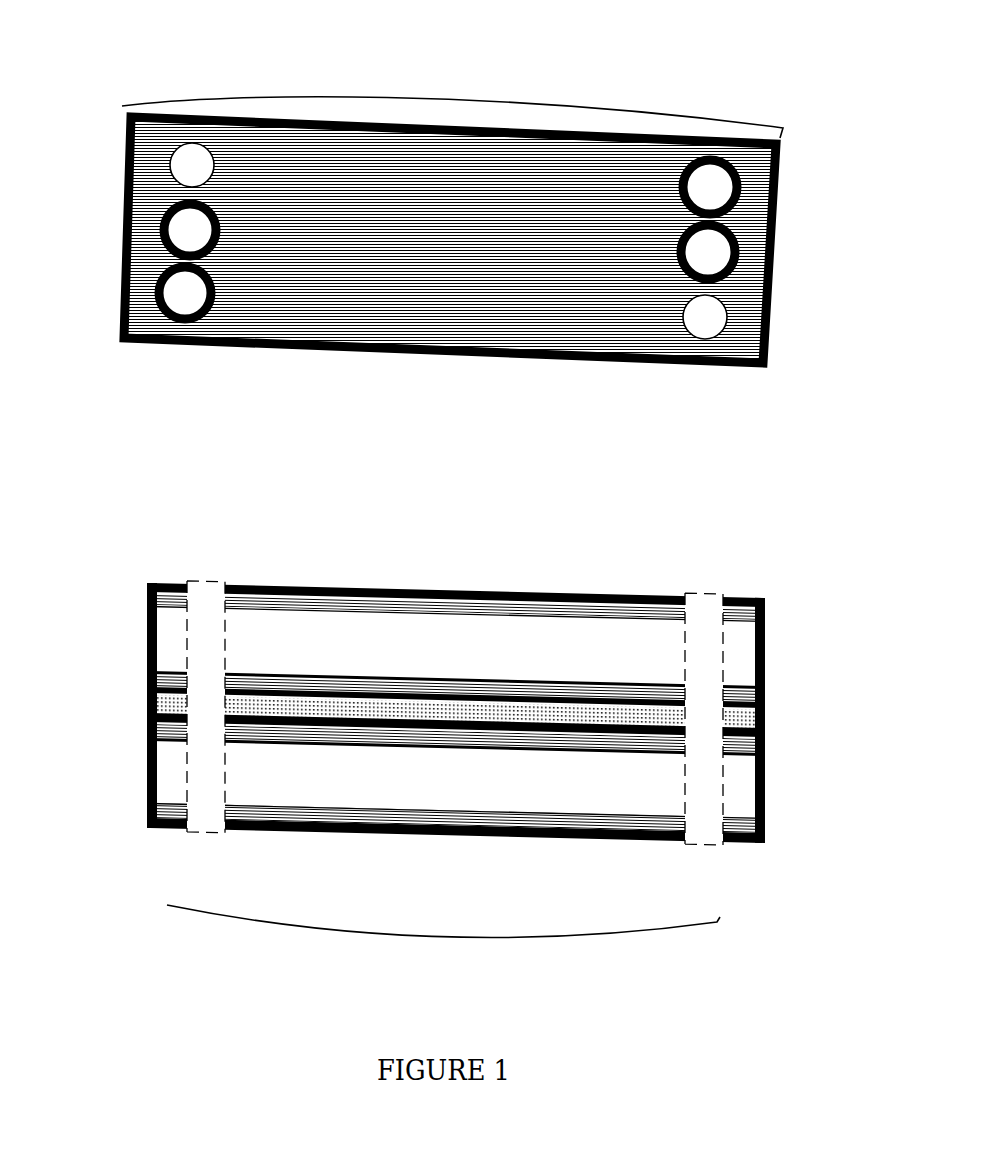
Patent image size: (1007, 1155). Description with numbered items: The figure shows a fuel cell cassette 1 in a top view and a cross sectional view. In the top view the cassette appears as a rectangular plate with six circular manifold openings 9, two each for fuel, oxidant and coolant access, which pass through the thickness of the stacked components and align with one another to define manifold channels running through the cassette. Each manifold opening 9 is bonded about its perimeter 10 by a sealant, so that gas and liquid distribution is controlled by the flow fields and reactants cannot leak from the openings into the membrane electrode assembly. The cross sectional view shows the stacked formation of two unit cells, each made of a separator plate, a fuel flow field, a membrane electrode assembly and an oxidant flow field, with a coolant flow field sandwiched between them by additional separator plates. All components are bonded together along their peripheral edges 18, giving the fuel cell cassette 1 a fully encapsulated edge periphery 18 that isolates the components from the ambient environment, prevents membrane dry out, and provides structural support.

The fuel cell cassette 1 is at (445, 97).
The peripheral edges 18 is at (622, 130).
The perimeter of manifold opening 10 is at (162, 266).
The manifold openings 9 is at (185, 170).